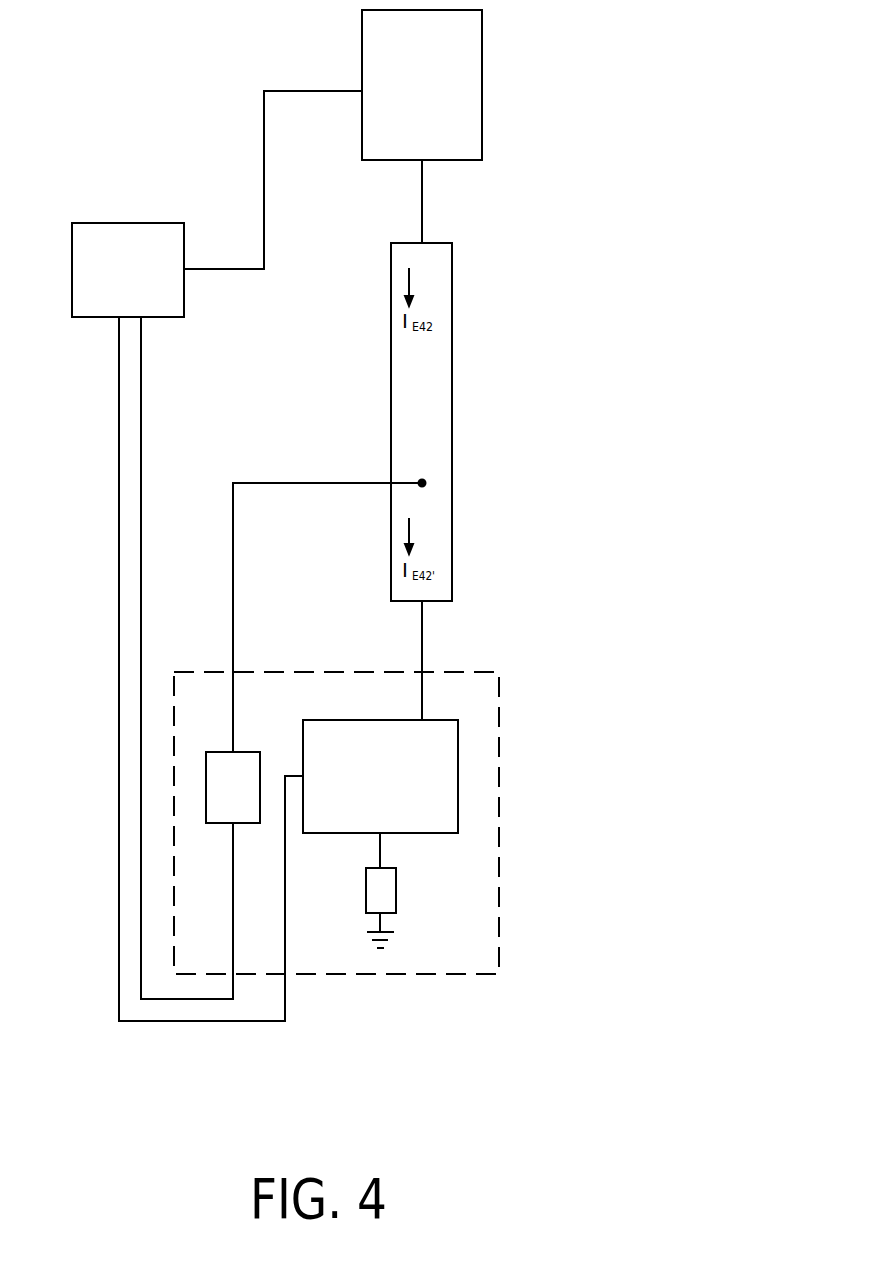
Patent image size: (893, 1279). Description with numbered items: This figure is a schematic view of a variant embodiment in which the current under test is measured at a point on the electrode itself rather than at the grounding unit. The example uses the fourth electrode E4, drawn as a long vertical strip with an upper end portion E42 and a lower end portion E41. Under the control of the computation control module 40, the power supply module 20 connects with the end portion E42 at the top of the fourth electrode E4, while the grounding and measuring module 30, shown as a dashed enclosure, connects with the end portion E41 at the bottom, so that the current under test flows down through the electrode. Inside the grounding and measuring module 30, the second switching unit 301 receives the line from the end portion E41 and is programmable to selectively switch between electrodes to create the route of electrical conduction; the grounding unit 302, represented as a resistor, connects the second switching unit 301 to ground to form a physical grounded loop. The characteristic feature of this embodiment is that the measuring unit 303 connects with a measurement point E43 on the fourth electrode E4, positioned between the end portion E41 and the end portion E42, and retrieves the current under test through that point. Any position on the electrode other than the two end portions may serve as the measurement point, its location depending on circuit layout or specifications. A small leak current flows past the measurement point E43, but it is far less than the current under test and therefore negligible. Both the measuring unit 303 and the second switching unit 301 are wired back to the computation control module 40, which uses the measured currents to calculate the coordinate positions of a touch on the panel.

The power supply module 20 is at (482, 96).
The computation control module 40 is at (127, 223).
The fourth electrode E4 is at (440, 401).
The end portion E42 is at (440, 241).
The measurement point E43 is at (422, 475).
The end portion E41 is at (437, 601).
The grounding and measuring module 30 is at (499, 920).
The second switching unit 301 is at (458, 757).
The grounding unit 302 is at (396, 892).
The measuring unit 303 is at (206, 784).